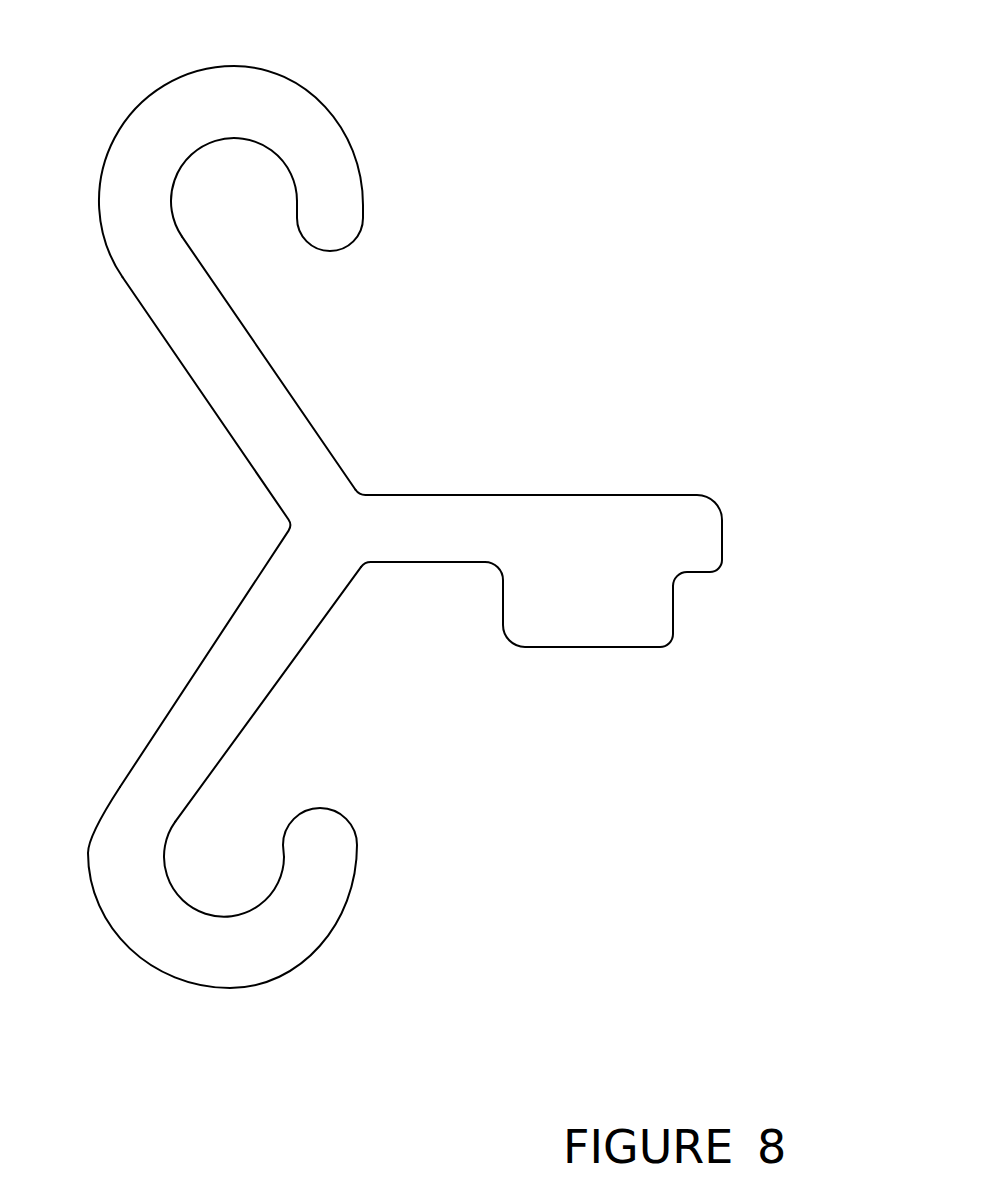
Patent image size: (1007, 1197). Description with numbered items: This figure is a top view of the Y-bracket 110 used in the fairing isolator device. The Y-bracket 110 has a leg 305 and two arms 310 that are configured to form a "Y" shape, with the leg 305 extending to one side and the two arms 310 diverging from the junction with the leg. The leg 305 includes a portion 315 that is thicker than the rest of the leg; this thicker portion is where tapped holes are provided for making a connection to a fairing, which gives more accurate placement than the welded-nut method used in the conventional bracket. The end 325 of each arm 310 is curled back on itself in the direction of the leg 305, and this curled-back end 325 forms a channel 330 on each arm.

The Y-bracket 110 is at (397, 502).
The leg 305 is at (428, 488).
The arms 310 is at (172, 355).
The thicker portion 315 is at (580, 653).
The end of arm 325 is at (330, 252).
The channel 330 is at (235, 200).